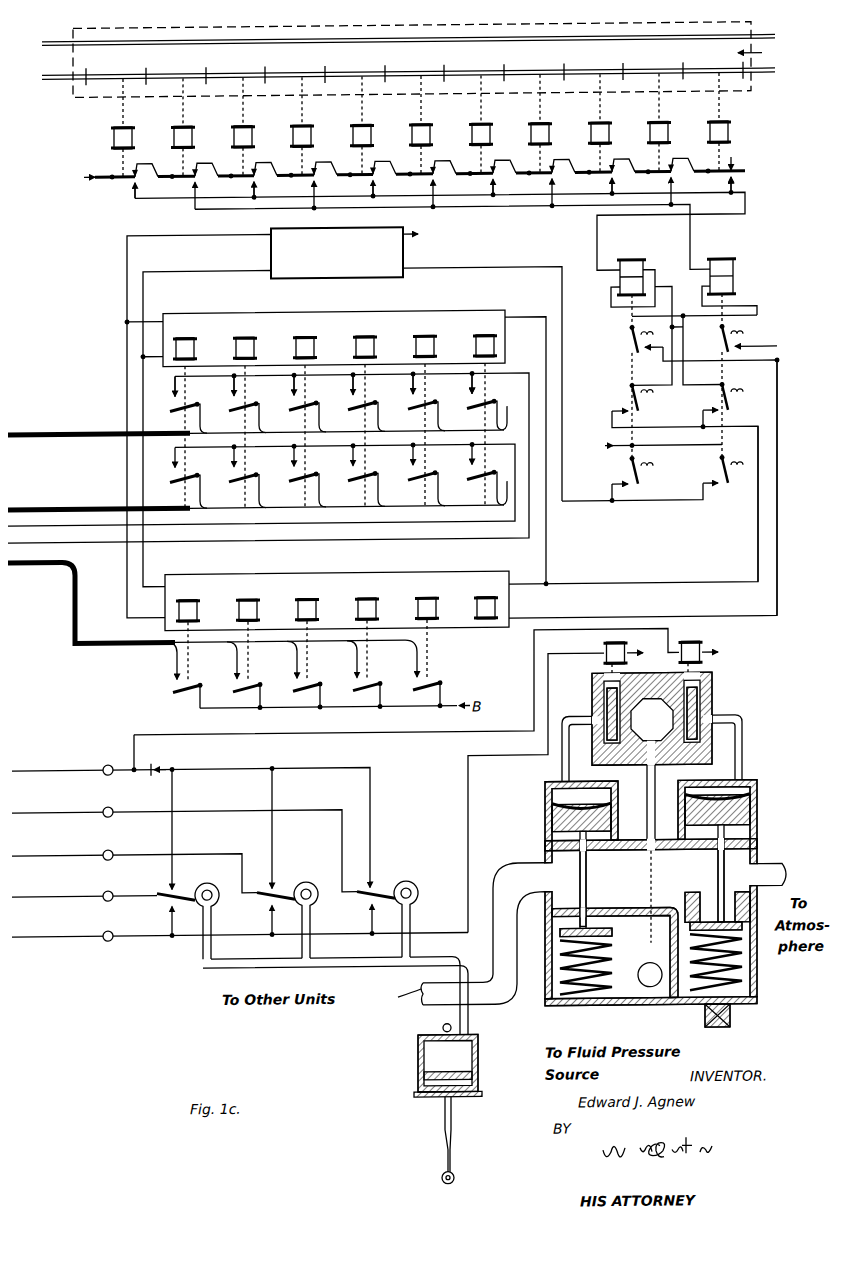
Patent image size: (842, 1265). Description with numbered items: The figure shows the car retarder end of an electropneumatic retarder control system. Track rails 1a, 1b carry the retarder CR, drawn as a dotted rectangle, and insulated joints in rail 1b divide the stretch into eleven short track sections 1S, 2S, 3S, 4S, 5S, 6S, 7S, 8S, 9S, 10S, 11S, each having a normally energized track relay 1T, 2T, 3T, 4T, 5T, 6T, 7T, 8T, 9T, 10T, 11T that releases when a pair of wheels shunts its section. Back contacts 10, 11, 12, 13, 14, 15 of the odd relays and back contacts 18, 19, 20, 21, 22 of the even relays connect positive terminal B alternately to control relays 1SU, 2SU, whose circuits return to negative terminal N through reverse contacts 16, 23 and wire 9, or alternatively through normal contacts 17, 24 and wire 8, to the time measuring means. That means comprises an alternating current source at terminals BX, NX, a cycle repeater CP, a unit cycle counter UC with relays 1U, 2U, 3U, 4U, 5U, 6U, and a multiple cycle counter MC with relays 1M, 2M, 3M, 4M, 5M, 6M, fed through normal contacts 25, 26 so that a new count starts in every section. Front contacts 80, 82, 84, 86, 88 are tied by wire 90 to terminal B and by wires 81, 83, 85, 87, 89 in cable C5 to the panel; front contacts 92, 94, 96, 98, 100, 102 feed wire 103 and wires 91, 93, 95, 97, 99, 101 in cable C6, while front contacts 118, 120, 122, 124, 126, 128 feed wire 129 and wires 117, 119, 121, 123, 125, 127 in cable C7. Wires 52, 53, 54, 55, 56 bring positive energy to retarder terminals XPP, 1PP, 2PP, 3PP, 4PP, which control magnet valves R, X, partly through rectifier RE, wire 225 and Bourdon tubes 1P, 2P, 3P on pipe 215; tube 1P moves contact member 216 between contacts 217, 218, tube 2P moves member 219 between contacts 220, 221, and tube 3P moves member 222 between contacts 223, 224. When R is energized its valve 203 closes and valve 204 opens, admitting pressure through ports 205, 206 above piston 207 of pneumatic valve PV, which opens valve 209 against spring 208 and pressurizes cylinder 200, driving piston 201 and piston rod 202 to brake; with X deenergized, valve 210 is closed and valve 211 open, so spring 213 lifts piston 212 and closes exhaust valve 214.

The track rail 1a is at (57, 38).
The track rail 1b is at (57, 72).
The car retarder CR is at (412, 50).
The track section 1S is at (707, 84).
The track section 2S is at (650, 85).
The track section 3S is at (592, 85).
The track section 4S is at (532, 86).
The track section 5S is at (473, 86).
The track section 6S is at (417, 87).
The track section 7S is at (358, 88).
The track section 8S is at (298, 88).
The track section 9S is at (240, 89).
The track section 10S is at (180, 89).
The track section 11S is at (123, 90).
The track relay 1T is at (719, 135).
The track relay 2T is at (659, 135).
The track relay 3T is at (600, 136).
The track relay 4T is at (540, 137).
The track relay 5T is at (481, 137).
The track relay 6T is at (421, 138).
The track relay 7T is at (362, 138).
The track relay 8T is at (302, 139).
The track relay 9T is at (243, 140).
The track relay 10T is at (184, 140).
The track relay 11T is at (124, 141).
The back contact 10 is at (719, 163).
The back contact 11 is at (593, 163).
The back contact 12 is at (474, 164).
The back contact 13 is at (355, 164).
The back contact 14 is at (236, 165).
The back contact 15 is at (115, 166).
The back contact 18 is at (653, 163).
The back contact 19 is at (534, 164).
The back contact 20 is at (414, 164).
The back contact 21 is at (295, 165).
The back contact 22 is at (176, 165).
The positive terminal B is at (81, 179).
The control relay 1SU is at (633, 283).
The control relay 2SU is at (729, 282).
The reverse contact 23 is at (627, 345).
The reverse contact 16 is at (720, 345).
The normal contact 17 is at (627, 402).
The normal contact 24 is at (726, 392).
The normal contact 25 is at (627, 477).
The normal contact 26 is at (717, 479).
The alternating current source terminal BX is at (651, 445).
The wire 8 is at (758, 528).
The wire 9 is at (779, 530).
The alternating current cycle repeater CP is at (271, 257).
The alternating current source terminal NX is at (422, 236).
The multiple cycle counter MC is at (334, 327).
The counting relay 1M is at (185, 414).
The counting relay 2M is at (245, 414).
The counting relay 3M is at (305, 413).
The counting relay 4M is at (365, 412).
The counting relay 5M is at (425, 412).
The counting relay 6M is at (485, 411).
The wire 117 is at (211, 418).
The front contact 118 is at (191, 398).
The wire 119 is at (270, 417).
The front contact 120 is at (250, 397).
The wire 121 is at (330, 417).
The front contact 122 is at (310, 397).
The wire 123 is at (389, 416).
The front contact 124 is at (369, 396).
The wire 125 is at (449, 416).
The front contact 126 is at (429, 396).
The wire 127 is at (509, 415).
The front contact 128 is at (488, 395).
The wire 91 is at (188, 491).
The front contact 92 is at (189, 469).
The wire 93 is at (247, 491).
The front contact 94 is at (248, 469).
The wire 95 is at (307, 490).
The front contact 96 is at (308, 468).
The wire 97 is at (366, 489).
The front contact 98 is at (367, 467).
The wire 99 is at (427, 489).
The front contact 100 is at (430, 467).
The wire 101 is at (484, 488).
The front contact 102 is at (489, 466).
The wire 103 is at (95, 520).
The wire 129 is at (81, 541).
The cable C5 is at (91, 602).
The cable C6 is at (99, 497).
The cable C7 is at (99, 422).
The unit cycle counter UC is at (337, 588).
The counter relay 1U is at (188, 631).
The counter relay 2U is at (248, 631).
The counter relay 3U is at (307, 630).
The counter relay 4U is at (367, 629).
The counter relay 5U is at (427, 629).
The counter relay 6U is at (486, 598).
The front contact 80 is at (193, 679).
The wire 81 is at (171, 668).
The front contact 82 is at (253, 678).
The wire 83 is at (211, 697).
The front contact 84 is at (313, 678).
The wire 85 is at (271, 696).
The front contact 86 is at (373, 677).
The wire 87 is at (331, 696).
The front contact 88 is at (433, 677).
The wire 89 is at (391, 695).
The wire 90 is at (372, 710).
The magnet valve R is at (604, 652).
The magnet valve X is at (699, 653).
The negative terminal N is at (689, 654).
The wire 52 is at (191, 820).
The wire 53 is at (184, 843).
The wire 54 is at (134, 865).
The wire 55 is at (84, 889).
The wire 56 is at (240, 928).
The circuit terminal XPP is at (103, 754).
The circuit terminal 1PP is at (103, 796).
The circuit terminal 2PP is at (103, 839).
The circuit terminal 3PP is at (103, 880).
The circuit terminal 4PP is at (103, 920).
The half wave rectifier element RE is at (169, 760).
The second position contact 224 is at (170, 886).
The contact member 222 is at (155, 919).
The first position contact 223 is at (180, 920).
The second position contact 221 is at (276, 866).
The contact member 219 is at (251, 918).
The first position contact 220 is at (265, 924).
The stationary contact 218 is at (374, 866).
The contact member 216 is at (350, 917).
The stationary contact 217 is at (362, 923).
The pressure responsive device 3P is at (207, 914).
The pressure responsive device 2P is at (306, 913).
The pressure responsive device 1P is at (406, 912).
The pipe 215 is at (224, 969).
The wire 225 is at (468, 838).
The pneumatic control valve PV is at (524, 853).
The cylinder 200 is at (418, 1053).
The piston 201 is at (472, 1072).
The piston rod 202 is at (441, 1119).
The valve 203 is at (605, 706).
The valve 204 is at (652, 719).
The valve 211 is at (700, 703).
The valve 210 is at (737, 733).
The port 206 is at (545, 775).
The piston 207 is at (552, 801).
The piston 212 is at (754, 774).
The port 205 is at (648, 890).
The valve 214 is at (745, 886).
The valve 209 is at (611, 958).
The biasing spring 208 is at (605, 1005).
The bias spring 213 is at (652, 990).